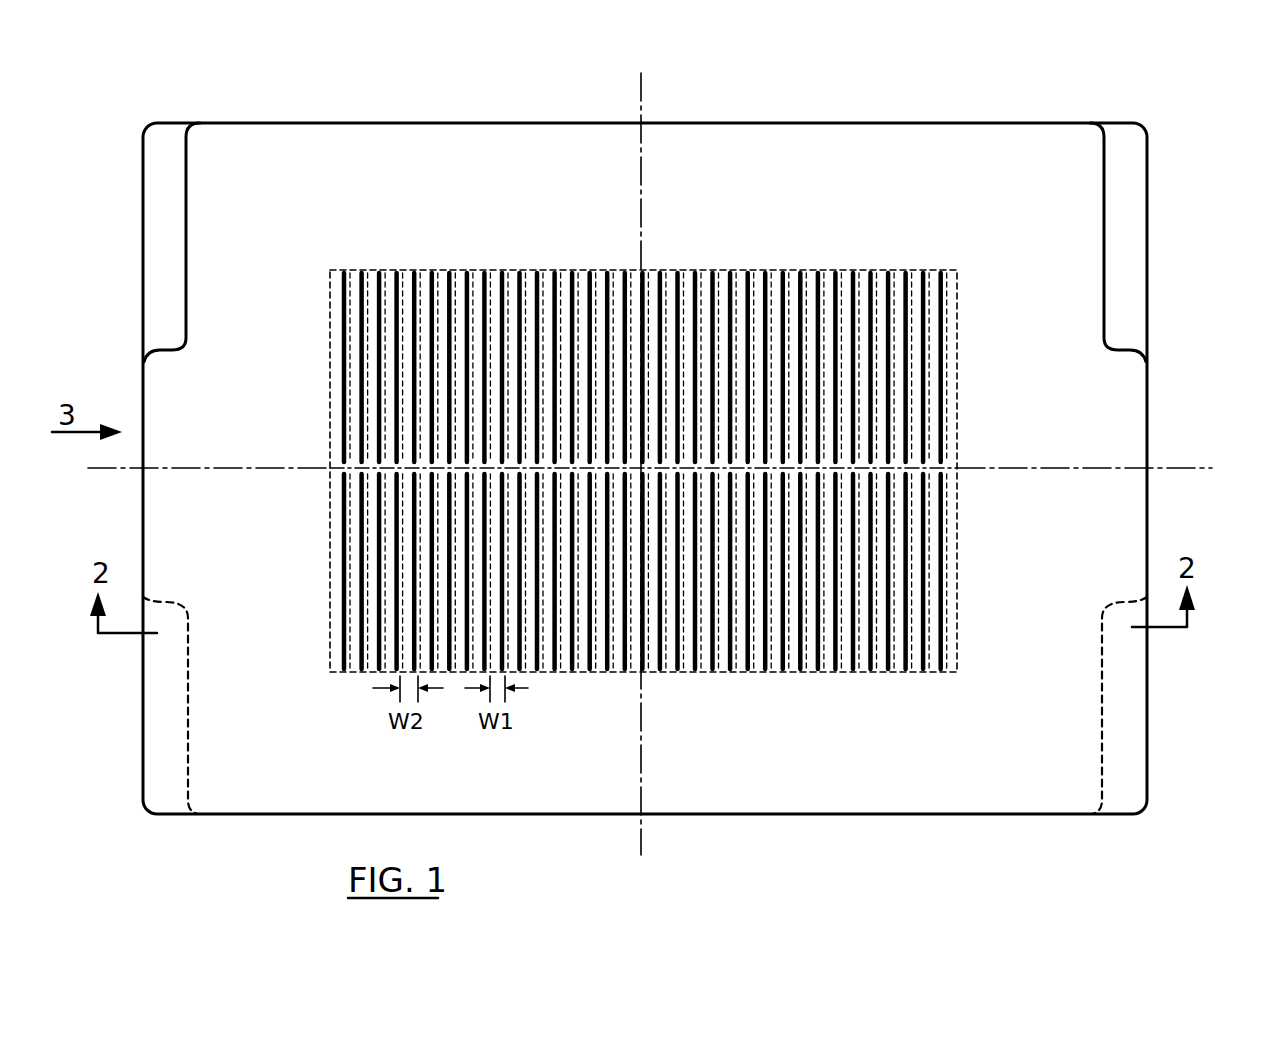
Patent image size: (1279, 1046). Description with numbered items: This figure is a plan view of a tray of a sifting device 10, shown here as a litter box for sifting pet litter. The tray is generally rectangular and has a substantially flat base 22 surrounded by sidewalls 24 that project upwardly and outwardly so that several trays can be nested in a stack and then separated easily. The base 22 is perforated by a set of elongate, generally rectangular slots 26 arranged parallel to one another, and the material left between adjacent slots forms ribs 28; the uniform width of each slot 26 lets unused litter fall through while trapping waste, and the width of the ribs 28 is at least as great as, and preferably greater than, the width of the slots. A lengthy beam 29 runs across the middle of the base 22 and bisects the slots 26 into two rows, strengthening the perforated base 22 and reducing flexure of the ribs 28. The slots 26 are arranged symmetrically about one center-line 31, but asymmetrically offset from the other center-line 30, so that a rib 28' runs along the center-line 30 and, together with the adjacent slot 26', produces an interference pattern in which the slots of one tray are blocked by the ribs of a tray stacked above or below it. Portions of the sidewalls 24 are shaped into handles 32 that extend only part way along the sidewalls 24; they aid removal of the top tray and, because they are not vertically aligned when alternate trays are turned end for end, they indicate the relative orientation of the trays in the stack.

The device 10 is at (1182, 100).
The base 22 is at (330, 330).
The sidewalls 24 is at (982, 128).
The slots 26 is at (487, 448).
The ribs 28 is at (488, 447).
The mirrored first fins 26' is at (756, 447).
The rib 28' is at (798, 447).
The beam 29 is at (958, 466).
The center-line 30 is at (643, 102).
The center-line 31 is at (1183, 465).
The handles 32 is at (162, 525).